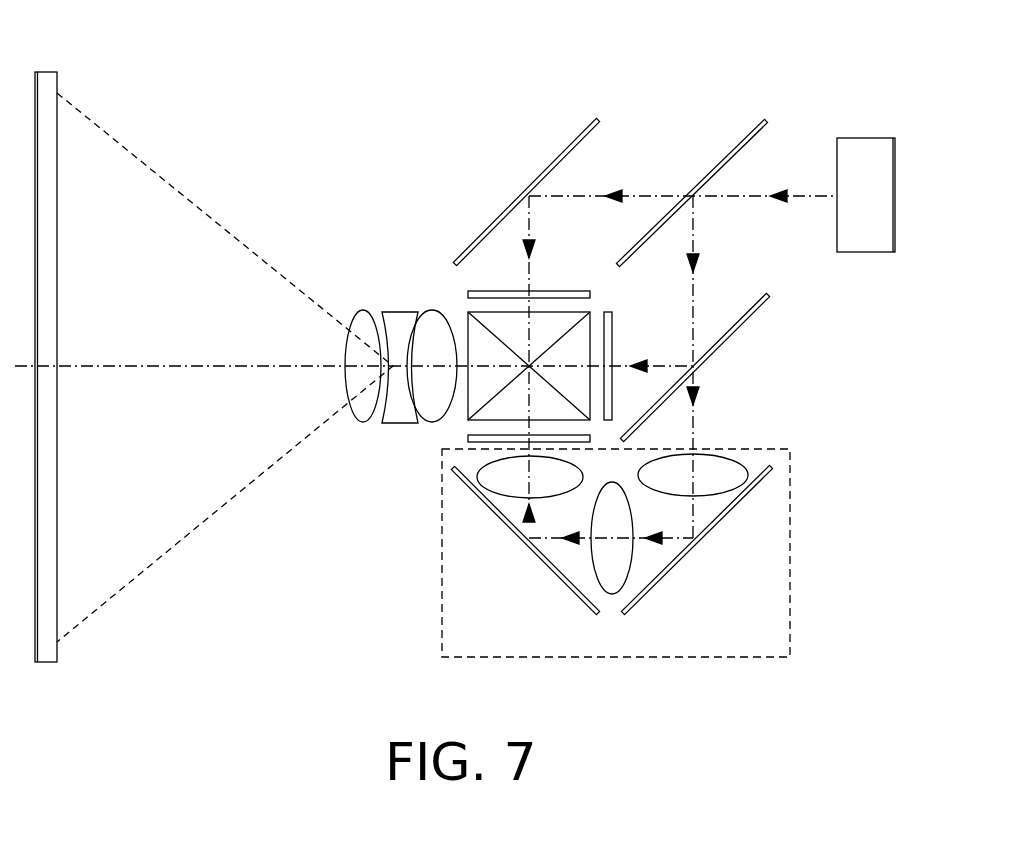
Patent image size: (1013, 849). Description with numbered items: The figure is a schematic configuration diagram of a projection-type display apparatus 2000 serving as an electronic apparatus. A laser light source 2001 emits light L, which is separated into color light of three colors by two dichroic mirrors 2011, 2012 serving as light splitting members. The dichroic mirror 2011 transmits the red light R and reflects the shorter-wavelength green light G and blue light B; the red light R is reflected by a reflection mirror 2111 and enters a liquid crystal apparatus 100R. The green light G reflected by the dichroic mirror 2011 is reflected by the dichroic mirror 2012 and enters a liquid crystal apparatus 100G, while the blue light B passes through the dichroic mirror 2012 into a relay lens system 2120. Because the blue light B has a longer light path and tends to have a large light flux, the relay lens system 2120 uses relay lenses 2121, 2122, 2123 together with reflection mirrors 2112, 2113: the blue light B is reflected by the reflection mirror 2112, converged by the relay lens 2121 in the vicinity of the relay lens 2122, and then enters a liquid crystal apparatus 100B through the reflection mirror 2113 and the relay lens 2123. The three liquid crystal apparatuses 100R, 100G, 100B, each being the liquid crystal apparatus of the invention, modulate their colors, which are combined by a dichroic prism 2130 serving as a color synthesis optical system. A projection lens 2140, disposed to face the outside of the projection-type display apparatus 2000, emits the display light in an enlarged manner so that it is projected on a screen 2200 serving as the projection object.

The projection-type display apparatus 2000 is at (676, 33).
The laser light source 2001 is at (866, 138).
The dichroic mirror 2011 is at (733, 152).
The dichroic mirror 2012 is at (730, 337).
The reflection mirror 2111 is at (567, 152).
The reflection mirror 2112 is at (648, 596).
The reflection mirror 2113 is at (570, 592).
The liquid crystal apparatus 100R is at (503, 291).
The liquid crystal apparatus 100G is at (613, 335).
The liquid crystal apparatus 100B is at (467, 437).
The dichroic prism 2130 is at (482, 311).
The projection lens 2140 is at (453, 299).
The relay lens system 2120 is at (832, 483).
The relay lens 2121 is at (717, 488).
The relay lens 2122 is at (625, 575).
The relay lens 2123 is at (500, 486).
The screen 2200 is at (57, 651).